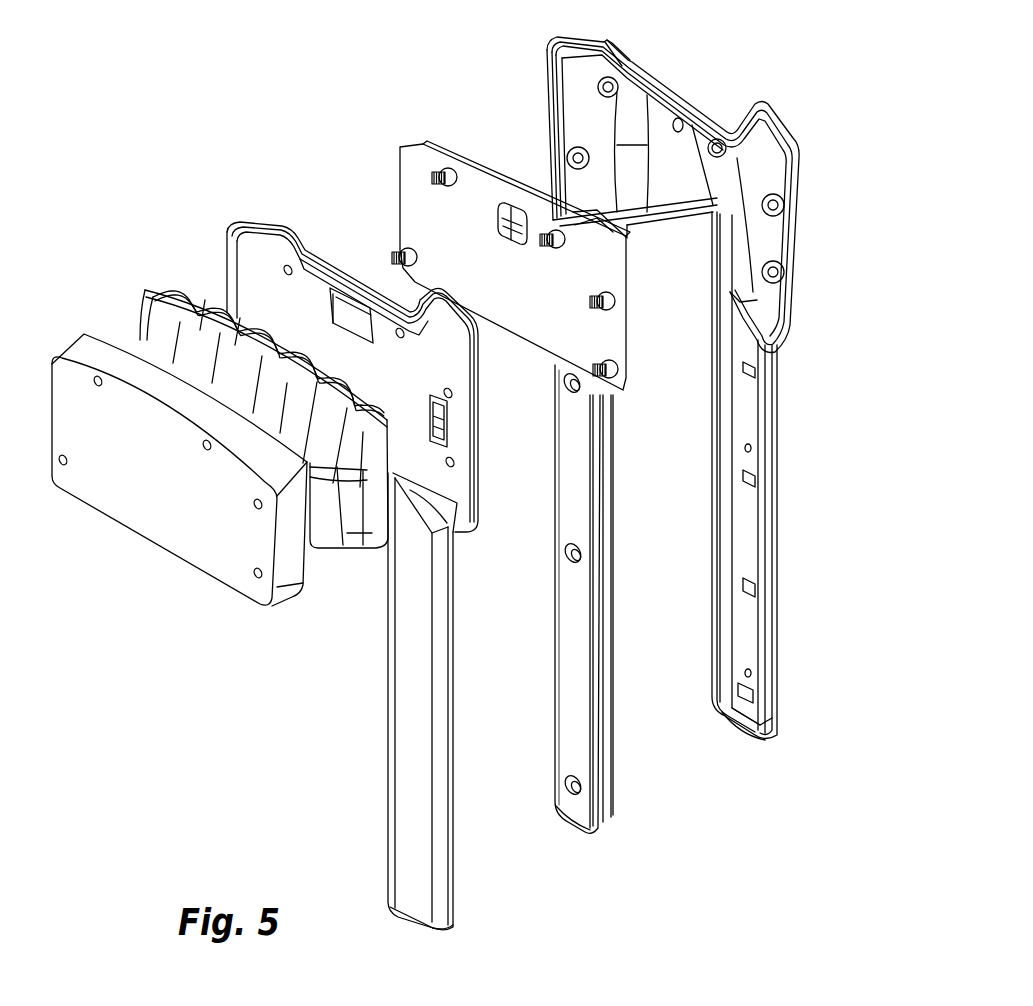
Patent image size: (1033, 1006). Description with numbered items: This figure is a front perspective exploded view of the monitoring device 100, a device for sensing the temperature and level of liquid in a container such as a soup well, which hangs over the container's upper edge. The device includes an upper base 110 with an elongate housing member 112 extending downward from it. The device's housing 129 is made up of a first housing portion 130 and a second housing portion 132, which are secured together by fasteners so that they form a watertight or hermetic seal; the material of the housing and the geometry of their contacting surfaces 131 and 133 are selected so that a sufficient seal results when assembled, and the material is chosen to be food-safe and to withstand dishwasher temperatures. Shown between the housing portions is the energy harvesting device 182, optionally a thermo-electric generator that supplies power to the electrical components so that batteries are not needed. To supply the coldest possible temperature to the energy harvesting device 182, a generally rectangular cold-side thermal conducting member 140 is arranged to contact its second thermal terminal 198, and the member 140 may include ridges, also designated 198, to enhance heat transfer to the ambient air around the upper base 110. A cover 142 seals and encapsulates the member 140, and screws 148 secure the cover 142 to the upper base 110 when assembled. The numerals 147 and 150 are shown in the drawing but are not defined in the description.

The monitoring device 100 is at (333, 98).
The upper base 110 is at (272, 225).
The elongate housing member 112 is at (388, 826).
The housing 129 is at (390, 697).
The first housing portion 130 is at (777, 470).
The contacting surface 131 is at (455, 845).
The second housing portion 132 is at (388, 772).
The contacting surface 133 is at (712, 687).
The cold-side thermal conducting member 140 is at (186, 292).
The cover 142 is at (132, 538).
The mounting holes 147 is at (565, 383).
The screws 148 is at (445, 172).
The mounting plate 150 is at (415, 170).
The energy harvesting device 182 is at (520, 205).
The second thermal terminal 198 is at (225, 320).